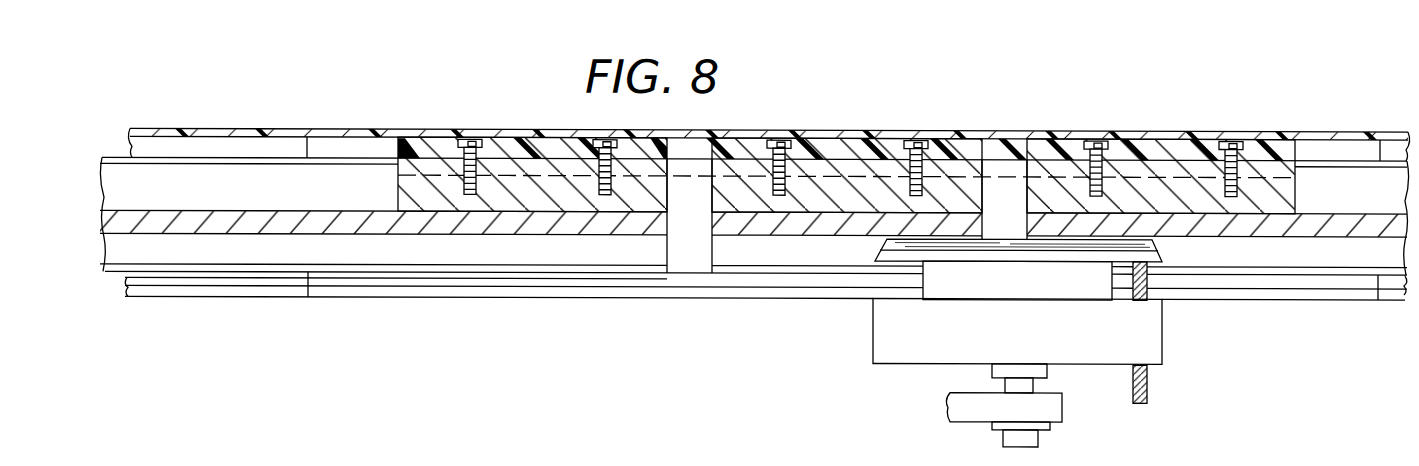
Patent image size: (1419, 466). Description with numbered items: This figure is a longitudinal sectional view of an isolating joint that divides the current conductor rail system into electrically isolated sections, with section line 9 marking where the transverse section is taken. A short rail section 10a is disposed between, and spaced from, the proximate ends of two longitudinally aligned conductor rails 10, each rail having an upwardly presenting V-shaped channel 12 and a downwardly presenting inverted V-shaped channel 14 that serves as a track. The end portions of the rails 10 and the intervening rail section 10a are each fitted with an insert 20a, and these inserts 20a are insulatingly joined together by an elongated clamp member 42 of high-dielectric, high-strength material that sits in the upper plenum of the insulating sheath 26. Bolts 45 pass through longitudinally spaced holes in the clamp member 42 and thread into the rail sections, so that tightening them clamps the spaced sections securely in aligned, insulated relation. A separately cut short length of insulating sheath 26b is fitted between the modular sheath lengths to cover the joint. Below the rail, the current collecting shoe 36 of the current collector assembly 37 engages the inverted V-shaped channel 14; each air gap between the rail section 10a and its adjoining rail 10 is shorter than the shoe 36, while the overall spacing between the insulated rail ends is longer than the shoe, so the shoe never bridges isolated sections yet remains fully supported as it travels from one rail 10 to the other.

The section line 9- 9 is at (469, 110).
The conductor rail 10 is at (330, 187).
The short rail section 10a is at (787, 225).
The V-shaped channel 12 is at (146, 192).
The inverted V-shaped channel 14 is at (146, 251).
The insert 20a is at (1233, 313).
The insulating sheath 26 is at (230, 133).
The short length of insulating sheath 26b is at (728, 135).
The current collecting shoe 36 is at (987, 247).
The current collector assembly 37 is at (960, 349).
The clamp member 42 is at (848, 149).
The bolts 45 is at (470, 137).